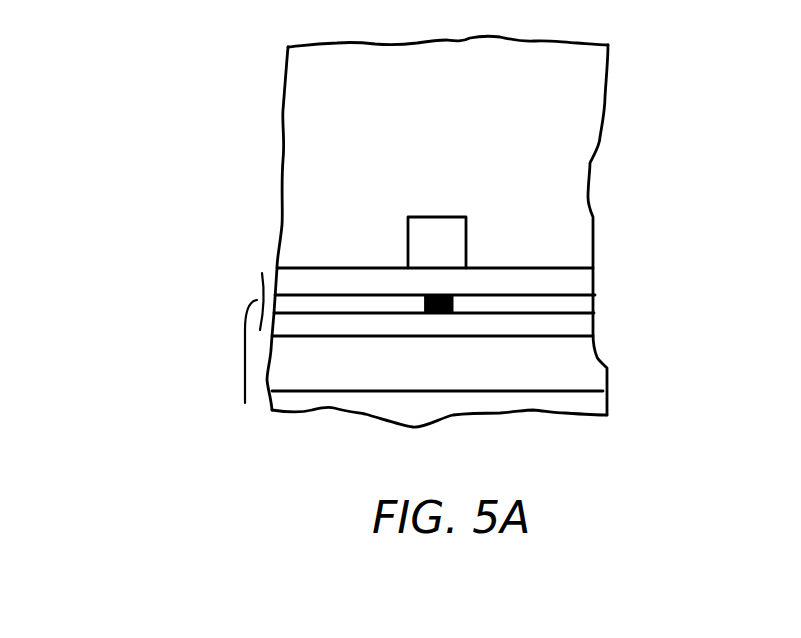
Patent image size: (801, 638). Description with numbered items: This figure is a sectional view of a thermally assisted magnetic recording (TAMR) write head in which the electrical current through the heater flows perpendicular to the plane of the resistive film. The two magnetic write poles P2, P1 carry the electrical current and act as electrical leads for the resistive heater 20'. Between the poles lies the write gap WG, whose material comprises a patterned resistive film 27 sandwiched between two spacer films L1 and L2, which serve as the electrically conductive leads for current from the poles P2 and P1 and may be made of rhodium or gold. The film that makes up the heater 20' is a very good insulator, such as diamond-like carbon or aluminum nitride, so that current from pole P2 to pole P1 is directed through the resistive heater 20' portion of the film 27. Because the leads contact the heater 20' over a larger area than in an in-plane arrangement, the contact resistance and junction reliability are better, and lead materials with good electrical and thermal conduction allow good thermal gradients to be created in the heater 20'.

The patterned resistive film 27 is at (310, 305).
The resistive heater 20' is at (386, 382).
The write pole P2 is at (443, 240).
The spacer film L2 is at (583, 278).
The spacer film L1 is at (582, 327).
The write pole P1 is at (575, 373).
The write gap WG is at (236, 360).